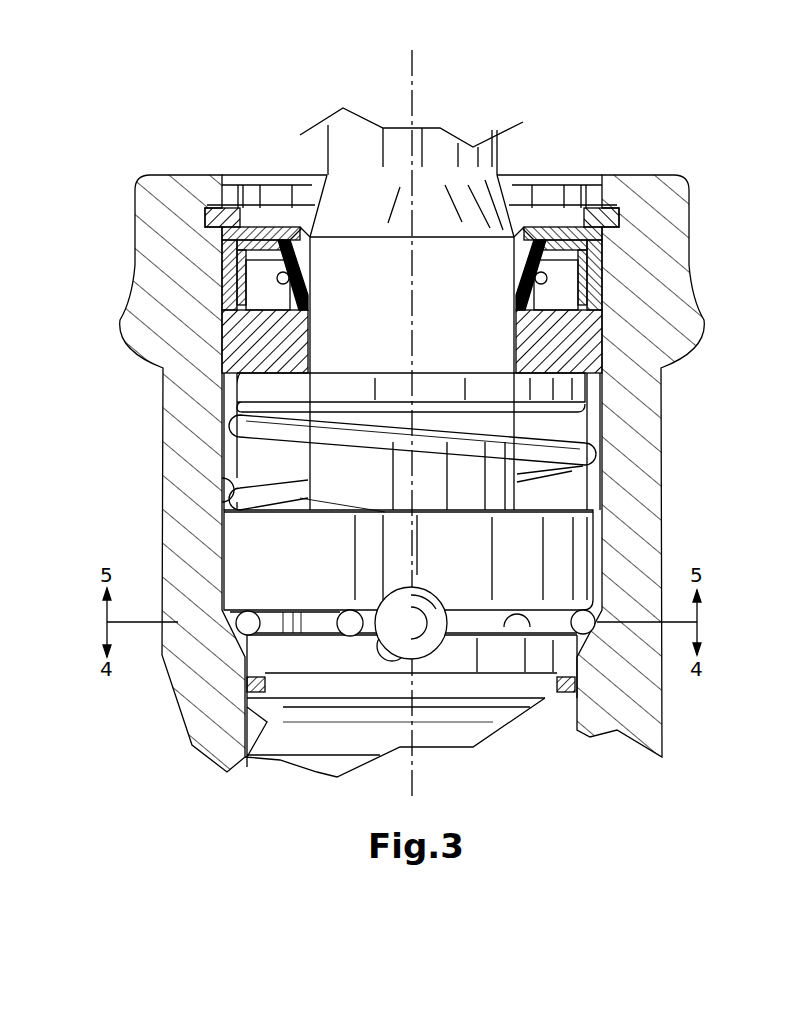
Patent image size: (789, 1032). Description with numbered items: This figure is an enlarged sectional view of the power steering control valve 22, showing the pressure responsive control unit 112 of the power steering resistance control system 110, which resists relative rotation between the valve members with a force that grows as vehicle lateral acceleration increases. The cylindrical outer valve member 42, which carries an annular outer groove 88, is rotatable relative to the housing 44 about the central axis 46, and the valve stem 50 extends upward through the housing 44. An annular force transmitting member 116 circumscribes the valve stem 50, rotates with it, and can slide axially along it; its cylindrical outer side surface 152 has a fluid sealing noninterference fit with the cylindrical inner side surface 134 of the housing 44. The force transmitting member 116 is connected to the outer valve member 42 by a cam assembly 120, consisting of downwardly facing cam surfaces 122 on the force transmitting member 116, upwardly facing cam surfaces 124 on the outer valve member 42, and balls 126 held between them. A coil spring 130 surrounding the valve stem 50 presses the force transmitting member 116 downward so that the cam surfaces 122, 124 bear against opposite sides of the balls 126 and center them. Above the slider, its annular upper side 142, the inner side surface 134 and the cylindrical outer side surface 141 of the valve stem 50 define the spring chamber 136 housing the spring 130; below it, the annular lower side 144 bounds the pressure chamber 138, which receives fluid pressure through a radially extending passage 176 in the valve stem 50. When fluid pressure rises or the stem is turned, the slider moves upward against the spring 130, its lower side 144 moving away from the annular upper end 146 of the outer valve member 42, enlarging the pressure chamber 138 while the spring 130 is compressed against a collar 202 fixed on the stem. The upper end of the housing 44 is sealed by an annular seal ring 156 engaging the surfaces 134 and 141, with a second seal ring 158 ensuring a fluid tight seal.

The power steering control valve 22 is at (628, 122).
The outer valve member 42 is at (305, 766).
The housing 44 is at (200, 203).
The central axis 46 is at (412, 92).
The valve stem 50 is at (478, 158).
The annular outer groove 88 is at (247, 723).
The power steering resistance control system 110 is at (598, 462).
The pressure responsive control unit 112 is at (598, 423).
The force transmitting member 116 is at (585, 530).
The cam assembly 120 is at (462, 583).
The cam surfaces 122 is at (448, 602).
The cam surfaces 124 is at (378, 655).
The balls 126 is at (262, 618).
The coil spring 130 is at (250, 440).
The inner side surface 134 is at (222, 470).
The spring chamber 136 is at (248, 447).
The pressure chamber 138 is at (490, 620).
The outer side surface 141 is at (517, 428).
The upper side 142 is at (250, 506).
The lower side 144 is at (574, 605).
The upper end 146 is at (552, 690).
The outer side surface 152 is at (382, 525).
The seal ring 156 is at (222, 327).
The second seal ring 158 is at (222, 250).
The radially extending passage 176 is at (350, 612).
The collar 202 is at (252, 388).